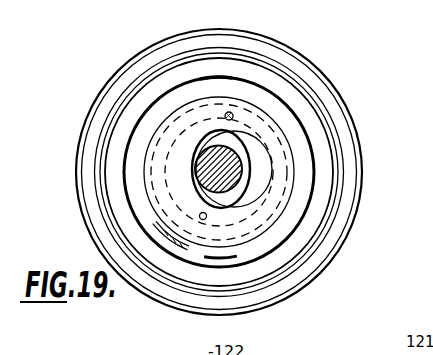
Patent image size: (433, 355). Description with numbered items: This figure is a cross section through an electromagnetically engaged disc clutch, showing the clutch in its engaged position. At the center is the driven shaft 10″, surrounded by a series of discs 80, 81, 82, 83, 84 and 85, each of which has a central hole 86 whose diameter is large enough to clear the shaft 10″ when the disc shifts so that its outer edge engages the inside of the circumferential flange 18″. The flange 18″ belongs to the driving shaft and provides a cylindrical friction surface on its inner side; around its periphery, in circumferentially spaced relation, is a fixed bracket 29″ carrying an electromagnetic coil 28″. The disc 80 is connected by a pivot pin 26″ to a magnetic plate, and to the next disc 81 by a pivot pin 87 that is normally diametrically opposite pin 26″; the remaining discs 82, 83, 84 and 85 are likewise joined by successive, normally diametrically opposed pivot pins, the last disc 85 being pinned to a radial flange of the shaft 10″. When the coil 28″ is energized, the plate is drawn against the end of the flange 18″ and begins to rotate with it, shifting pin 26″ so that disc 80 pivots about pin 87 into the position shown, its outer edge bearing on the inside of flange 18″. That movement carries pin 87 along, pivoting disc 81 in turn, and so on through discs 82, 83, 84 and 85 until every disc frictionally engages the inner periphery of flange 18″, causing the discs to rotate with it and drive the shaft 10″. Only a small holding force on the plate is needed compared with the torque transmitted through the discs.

The driven shaft 10 is at (197, 170).
The circumferential flange 18 is at (295, 92).
The pivot pin 26 is at (225, 112).
The electromagnetic coil 28 is at (273, 52).
The fixed bracket 29 is at (243, 30).
The disc 80 is at (157, 117).
The disc 81 is at (175, 239).
The disc 82 is at (207, 80).
The disc 83 is at (200, 257).
The disc 84 is at (228, 78).
The disc 85 is at (227, 257).
The central hole 86 is at (269, 185).
The pivot pin 87 is at (206, 218).